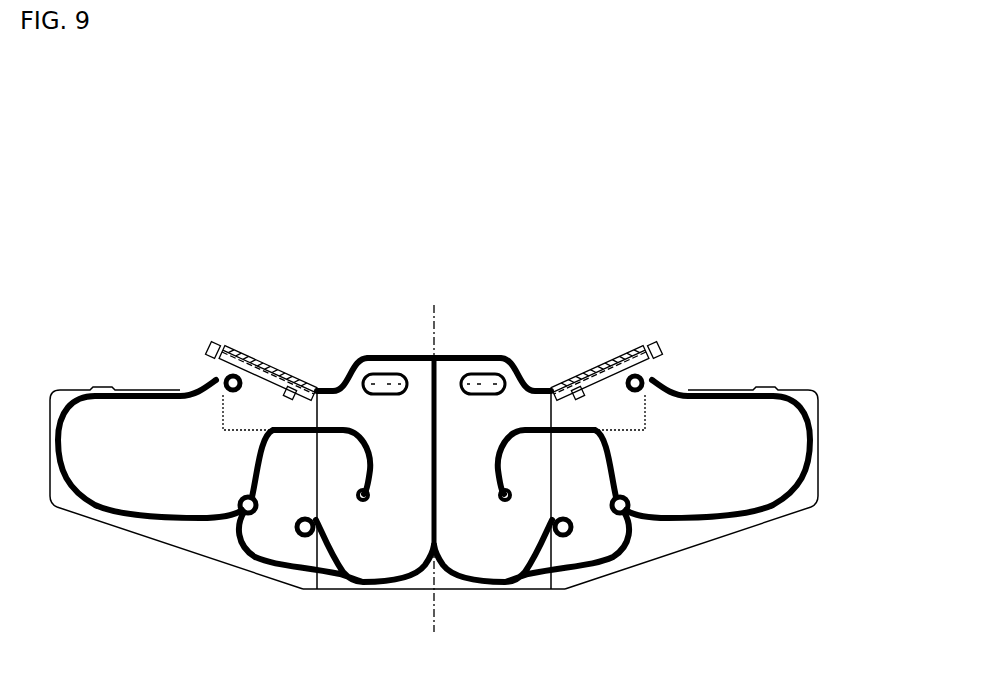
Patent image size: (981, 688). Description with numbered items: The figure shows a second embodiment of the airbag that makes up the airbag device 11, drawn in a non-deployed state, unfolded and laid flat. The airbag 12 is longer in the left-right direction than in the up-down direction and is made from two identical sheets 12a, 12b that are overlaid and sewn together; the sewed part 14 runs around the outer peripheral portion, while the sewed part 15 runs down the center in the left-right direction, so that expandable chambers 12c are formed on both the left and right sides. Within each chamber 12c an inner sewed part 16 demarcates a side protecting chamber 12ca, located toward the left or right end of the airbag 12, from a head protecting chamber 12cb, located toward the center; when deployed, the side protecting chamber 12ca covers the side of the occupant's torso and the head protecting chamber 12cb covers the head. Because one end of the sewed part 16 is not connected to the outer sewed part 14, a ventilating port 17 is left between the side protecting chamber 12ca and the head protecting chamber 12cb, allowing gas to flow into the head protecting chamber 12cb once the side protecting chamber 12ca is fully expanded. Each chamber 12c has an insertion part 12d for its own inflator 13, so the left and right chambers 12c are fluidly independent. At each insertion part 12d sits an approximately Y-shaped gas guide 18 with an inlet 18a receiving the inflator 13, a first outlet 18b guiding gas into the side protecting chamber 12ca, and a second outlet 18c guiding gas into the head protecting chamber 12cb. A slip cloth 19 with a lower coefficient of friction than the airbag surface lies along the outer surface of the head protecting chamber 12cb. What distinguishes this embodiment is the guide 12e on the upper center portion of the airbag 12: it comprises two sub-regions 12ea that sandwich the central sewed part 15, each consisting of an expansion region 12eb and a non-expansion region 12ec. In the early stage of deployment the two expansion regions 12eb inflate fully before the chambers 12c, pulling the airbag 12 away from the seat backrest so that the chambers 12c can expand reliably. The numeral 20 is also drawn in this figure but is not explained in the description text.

The airbag device 11 is at (660, 264).
The airbag 12 is at (570, 357).
The sheet 12a is at (434, 492).
The sheet 12b is at (677, 532).
The chamber 12c is at (267, 630).
The side protecting chamber 12ca is at (148, 540).
The head protecting chamber 12cb is at (260, 553).
The insertion part 12d is at (212, 343).
The guide 12e is at (540, 242).
The sub-region 12ea is at (423, 274).
The expansion region 12eb is at (420, 357).
The non-expansion region 12ec is at (373, 355).
The inflator 13 is at (258, 343).
The sewed part 14 is at (87, 497).
The sewed part 15 is at (427, 493).
The sewed part 16 is at (308, 437).
The ventilating port 17 is at (237, 505).
The gas guide 18 is at (253, 410).
The inlet 18a is at (212, 350).
The first outlet 18b is at (213, 410).
The second outlet 18c is at (303, 372).
The slip cloth 19 is at (410, 553).
The shoulder wall 20 is at (347, 353).